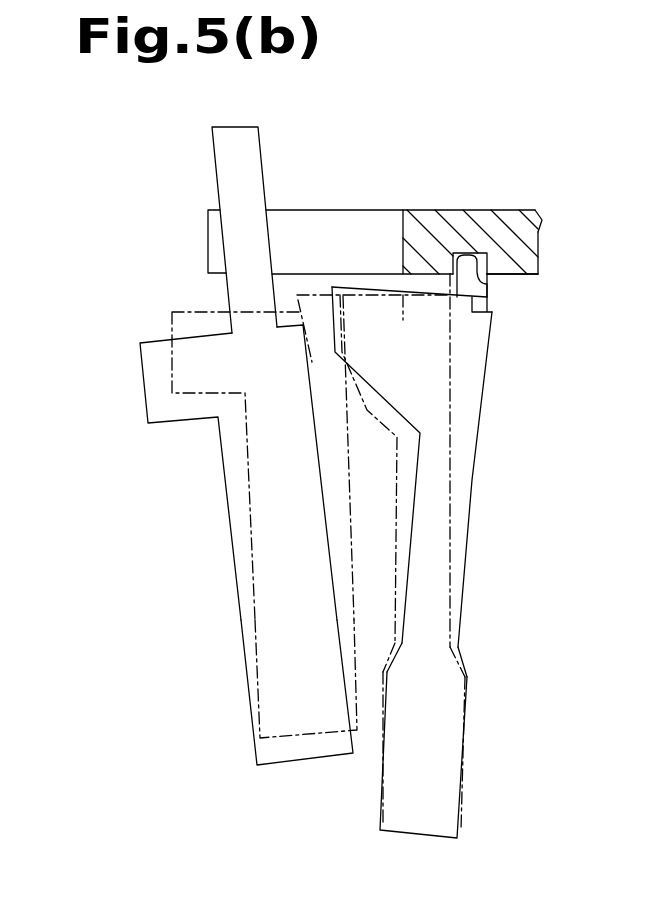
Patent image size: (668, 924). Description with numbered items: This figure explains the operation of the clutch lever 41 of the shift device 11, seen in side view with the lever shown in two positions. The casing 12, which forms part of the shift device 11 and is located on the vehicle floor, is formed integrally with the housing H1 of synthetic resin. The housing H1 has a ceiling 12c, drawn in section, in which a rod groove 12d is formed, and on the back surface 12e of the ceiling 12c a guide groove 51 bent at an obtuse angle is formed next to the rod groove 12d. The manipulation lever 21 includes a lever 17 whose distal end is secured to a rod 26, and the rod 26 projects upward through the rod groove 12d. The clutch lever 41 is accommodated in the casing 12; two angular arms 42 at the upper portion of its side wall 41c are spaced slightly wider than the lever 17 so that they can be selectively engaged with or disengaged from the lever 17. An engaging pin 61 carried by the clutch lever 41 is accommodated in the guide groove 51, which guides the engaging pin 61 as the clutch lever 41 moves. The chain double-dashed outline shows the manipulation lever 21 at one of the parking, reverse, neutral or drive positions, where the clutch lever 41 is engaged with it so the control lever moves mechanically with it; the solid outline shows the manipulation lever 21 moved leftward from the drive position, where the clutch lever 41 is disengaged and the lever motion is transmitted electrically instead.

The shift device 11 is at (499, 107).
The casing 12 is at (322, 212).
The ceiling 12c is at (540, 236).
The rod groove 12d is at (406, 212).
The back surface 12e is at (536, 275).
The housing H1 is at (528, 212).
The lever 17 is at (240, 607).
The manipulation lever 21 is at (212, 170).
The rod 26 is at (258, 142).
The clutch lever 41 is at (450, 423).
The side wall 41c is at (402, 555).
The angular arm 42 is at (360, 288).
The guide groove 51 is at (488, 302).
The engaging pin 61 is at (420, 285).